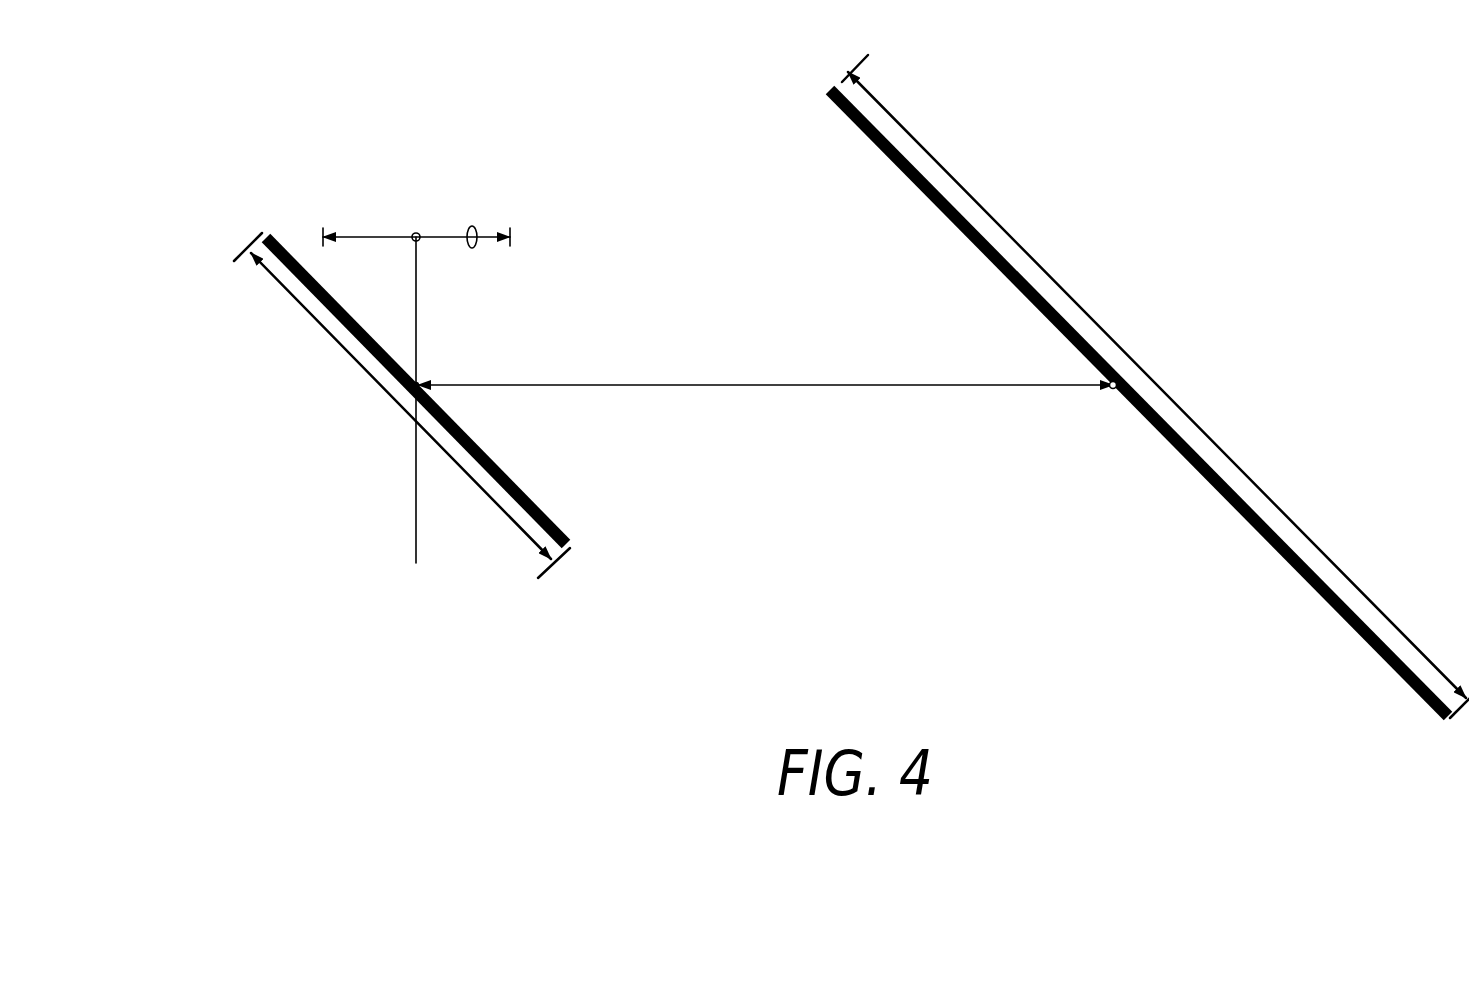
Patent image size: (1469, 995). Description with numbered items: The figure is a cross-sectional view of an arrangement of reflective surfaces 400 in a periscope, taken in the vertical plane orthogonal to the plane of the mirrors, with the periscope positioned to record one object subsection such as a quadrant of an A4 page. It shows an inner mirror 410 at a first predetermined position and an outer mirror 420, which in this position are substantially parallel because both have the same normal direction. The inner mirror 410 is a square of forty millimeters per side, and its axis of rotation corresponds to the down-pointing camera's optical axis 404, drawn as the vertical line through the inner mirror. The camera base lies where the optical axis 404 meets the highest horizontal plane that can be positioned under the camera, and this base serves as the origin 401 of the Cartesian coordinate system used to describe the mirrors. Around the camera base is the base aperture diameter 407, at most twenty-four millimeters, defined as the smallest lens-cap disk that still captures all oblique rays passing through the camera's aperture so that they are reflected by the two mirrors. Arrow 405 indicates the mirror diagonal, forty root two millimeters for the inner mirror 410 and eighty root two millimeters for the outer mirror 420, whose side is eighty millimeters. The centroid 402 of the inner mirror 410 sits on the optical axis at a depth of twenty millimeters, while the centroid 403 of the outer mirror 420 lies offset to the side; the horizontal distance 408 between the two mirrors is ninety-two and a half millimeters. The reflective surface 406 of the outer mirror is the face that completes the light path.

The arrangement of reflective surfaces 400 is at (1197, 140).
The origin 401 is at (425, 243).
The centroid of inner mirror 402 is at (420, 383).
The centroid of outer mirror 403 is at (1117, 390).
The optical axis 404 is at (416, 517).
The arrow indicating mirror diagonal 405 is at (280, 285).
The reflective surface of second mirror 406 is at (942, 172).
The base aperture diameter 407 is at (474, 227).
The horizontal distance 408 is at (733, 387).
The inner mirror 410 is at (280, 246).
The outer mirror 420 is at (892, 158).